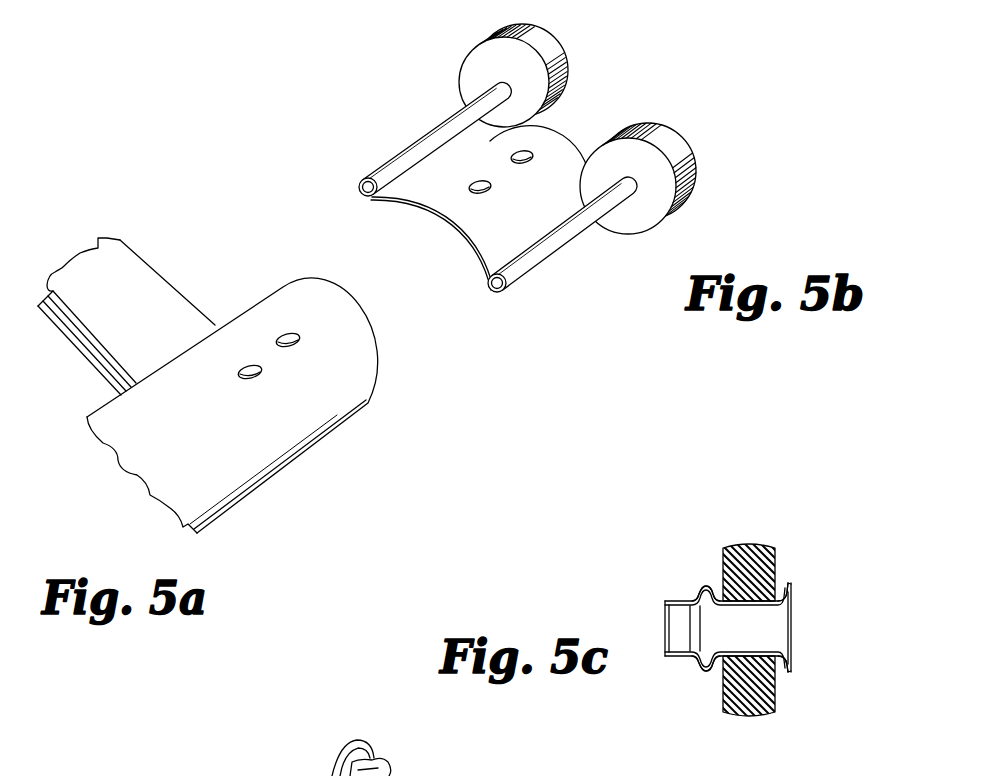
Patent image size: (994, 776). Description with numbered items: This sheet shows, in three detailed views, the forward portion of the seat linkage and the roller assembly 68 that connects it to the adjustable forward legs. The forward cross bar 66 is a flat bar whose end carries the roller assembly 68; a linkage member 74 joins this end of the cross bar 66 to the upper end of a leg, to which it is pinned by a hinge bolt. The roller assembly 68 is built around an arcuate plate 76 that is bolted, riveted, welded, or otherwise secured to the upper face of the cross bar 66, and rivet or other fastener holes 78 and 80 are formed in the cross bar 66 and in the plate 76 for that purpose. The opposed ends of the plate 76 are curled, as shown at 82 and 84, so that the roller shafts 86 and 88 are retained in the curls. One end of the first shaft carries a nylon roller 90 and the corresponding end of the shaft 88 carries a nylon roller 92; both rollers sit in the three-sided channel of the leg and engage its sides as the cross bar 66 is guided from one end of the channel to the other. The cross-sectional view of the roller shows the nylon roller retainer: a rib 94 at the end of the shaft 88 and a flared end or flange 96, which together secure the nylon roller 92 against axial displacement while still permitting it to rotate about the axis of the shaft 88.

In FIG. 5A, the forward cross bar 66 is at (347, 385).
In FIG. 5A, the linkage member 74 is at (117, 262).
In FIG. 5A, the fastener hole 78 is at (290, 337).
In FIG. 5B, the roller assembly 68 is at (510, 195).
In FIG. 5B, the arcuate plate 76 is at (432, 187).
In FIG. 5B, the fastener hole 80 is at (477, 193).
In FIG. 5B, the curled end of plate 82 is at (380, 170).
In FIG. 5B, the curled end of plate 84 is at (553, 243).
In FIG. 5B, the roller shaft 86 is at (360, 186).
In FIG. 5B, the roller shaft 88 is at (500, 293).
In FIG. 5C, the roller shaft 88 is at (683, 660).
In FIG. 5B, the nylon roller 90 is at (540, 37).
In FIG. 5B, the nylon roller 92 is at (668, 140).
In FIG. 5C, the nylon roller 92 is at (752, 538).
In FIG. 5C, the rib 94 is at (713, 588).
In FIG. 5C, the flared end or flange 96 is at (797, 592).